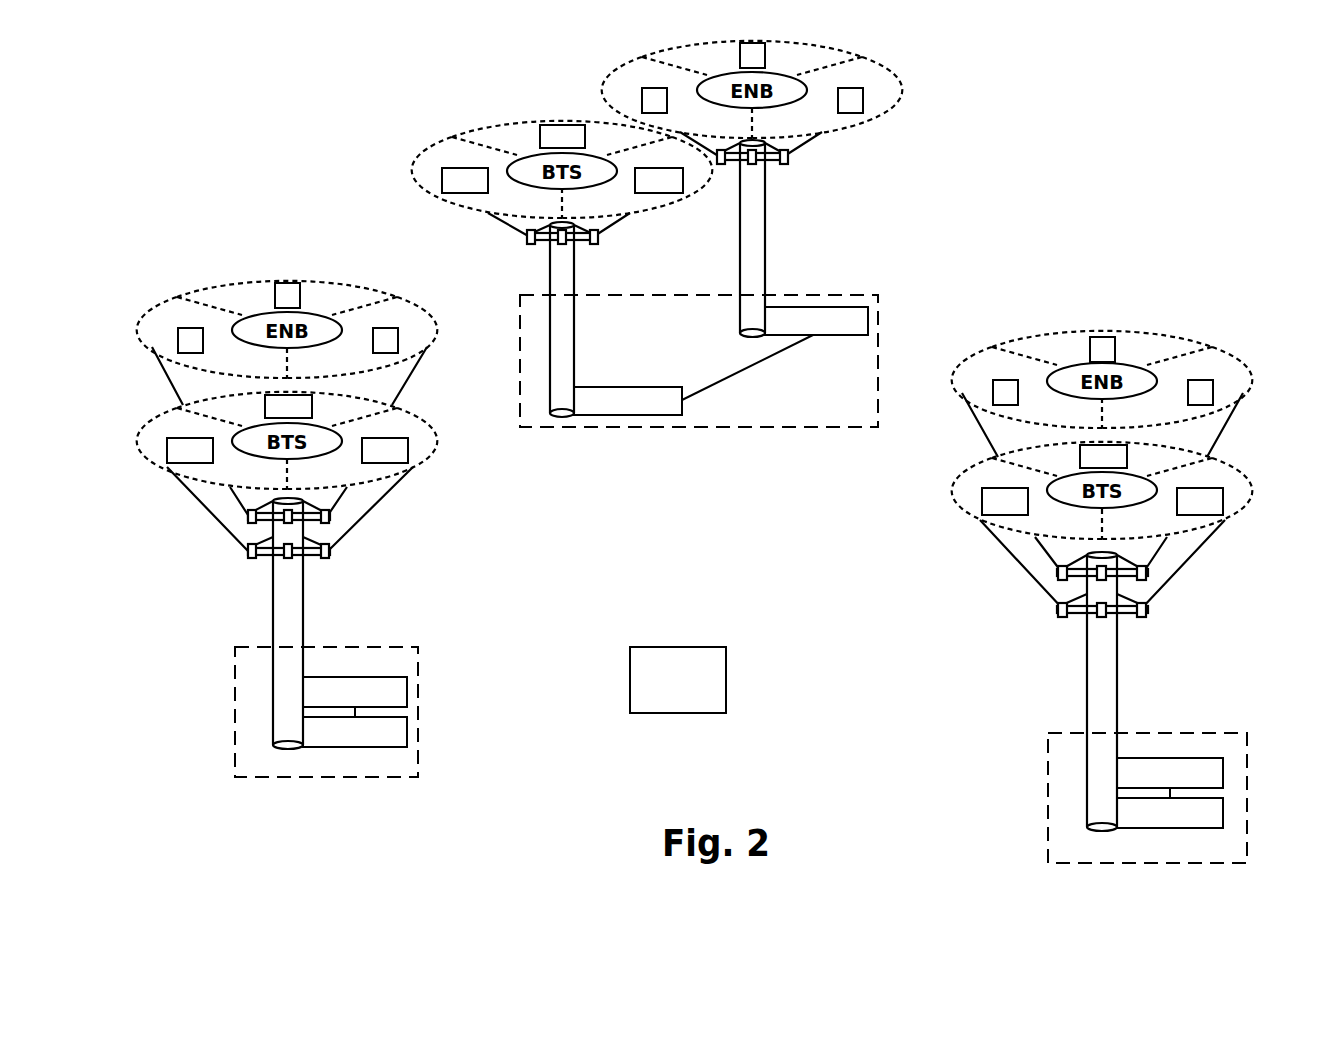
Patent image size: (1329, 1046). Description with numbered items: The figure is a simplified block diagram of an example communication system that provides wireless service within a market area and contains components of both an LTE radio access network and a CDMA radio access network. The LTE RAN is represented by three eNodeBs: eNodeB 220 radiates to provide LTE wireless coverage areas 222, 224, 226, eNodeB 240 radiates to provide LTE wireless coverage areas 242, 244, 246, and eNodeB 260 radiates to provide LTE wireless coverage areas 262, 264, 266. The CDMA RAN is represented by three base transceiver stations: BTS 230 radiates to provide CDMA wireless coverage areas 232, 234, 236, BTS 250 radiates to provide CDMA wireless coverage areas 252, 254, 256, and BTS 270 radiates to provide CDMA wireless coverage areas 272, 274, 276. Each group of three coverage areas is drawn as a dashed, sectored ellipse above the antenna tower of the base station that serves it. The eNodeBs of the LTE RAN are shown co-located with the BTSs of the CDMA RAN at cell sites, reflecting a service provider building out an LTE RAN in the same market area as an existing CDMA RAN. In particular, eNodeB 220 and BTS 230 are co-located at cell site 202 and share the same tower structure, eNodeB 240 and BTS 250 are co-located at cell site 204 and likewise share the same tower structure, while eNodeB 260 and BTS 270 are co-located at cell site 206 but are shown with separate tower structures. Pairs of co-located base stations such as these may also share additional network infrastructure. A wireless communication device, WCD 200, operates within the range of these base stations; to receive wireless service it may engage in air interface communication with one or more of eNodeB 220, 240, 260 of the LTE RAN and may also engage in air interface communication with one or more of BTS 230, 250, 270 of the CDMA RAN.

The WCD 200 is at (676, 714).
The cell site 202 is at (235, 705).
The cell site 204 is at (1048, 795).
The cell site 206 is at (519, 308).
The eNodeB 220 is at (408, 690).
The LTE wireless coverage area 222 is at (398, 297).
The LTE wireless coverage area 224 is at (232, 281).
The LTE wireless coverage area 226 is at (157, 305).
The base transceiver station 230 is at (408, 730).
The CDMA wireless coverage area 232 is at (413, 467).
The CDMA wireless coverage area 234 is at (345, 395).
The CDMA wireless coverage area 236 is at (158, 427).
The eNodeB 240 is at (1223, 770).
The LTE wireless coverage area 242 is at (1245, 370).
The LTE wireless coverage area 244 is at (1062, 332).
The LTE wireless coverage area 246 is at (958, 390).
The base transceiver station 250 is at (1223, 810).
The CDMA wireless coverage area 252 is at (1247, 490).
The CDMA wireless coverage area 254 is at (1150, 445).
The CDMA wireless coverage area 256 is at (957, 490).
The eNodeB 260 is at (869, 316).
The LTE wireless coverage area 262 is at (632, 60).
The LTE wireless coverage area 264 is at (820, 48).
The LTE wireless coverage area 266 is at (893, 77).
The base transceiver station 270 is at (628, 416).
The CDMA wireless coverage area 272 is at (427, 196).
The CDMA wireless coverage area 274 is at (483, 132).
The CDMA wireless coverage area 276 is at (660, 209).